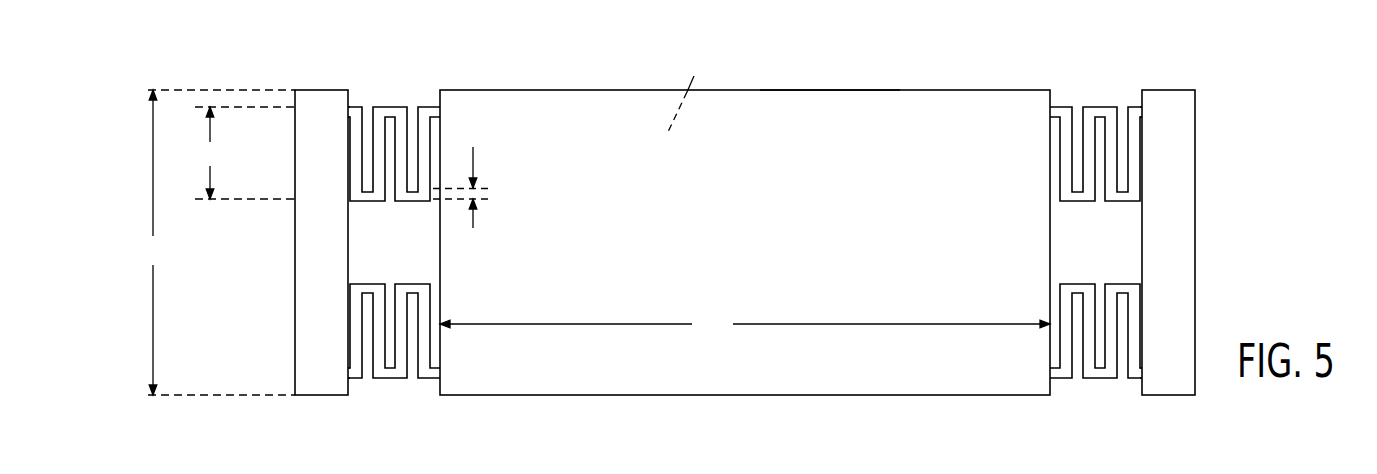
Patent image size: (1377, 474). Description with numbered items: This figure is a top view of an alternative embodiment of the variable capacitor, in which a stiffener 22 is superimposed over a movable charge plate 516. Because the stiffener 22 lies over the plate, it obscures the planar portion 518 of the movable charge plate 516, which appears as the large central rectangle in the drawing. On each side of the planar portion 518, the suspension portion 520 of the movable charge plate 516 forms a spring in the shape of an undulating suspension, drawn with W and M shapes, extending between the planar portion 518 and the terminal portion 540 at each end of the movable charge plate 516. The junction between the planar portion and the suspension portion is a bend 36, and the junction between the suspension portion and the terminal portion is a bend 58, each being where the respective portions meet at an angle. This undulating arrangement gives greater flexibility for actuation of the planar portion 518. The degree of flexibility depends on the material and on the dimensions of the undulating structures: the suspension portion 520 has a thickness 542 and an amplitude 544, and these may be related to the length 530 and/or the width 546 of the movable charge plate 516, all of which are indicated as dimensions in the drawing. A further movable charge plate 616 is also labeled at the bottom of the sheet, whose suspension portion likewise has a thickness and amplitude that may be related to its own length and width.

The stiffener 22 is at (734, 254).
The bend 36 is at (751, 242).
The bend 58 is at (347, 81).
The movable charge plate 516 is at (840, 74).
The planar portion 518 is at (694, 76).
The suspension portion 520 is at (385, 107).
The length 530 is at (745, 325).
The terminal portion 540 is at (324, 90).
The thickness 542 is at (473, 157).
The amplitude 544 is at (245, 153).
The width 546 is at (214, 242).
The movable charge plate 616 is at (829, 467).